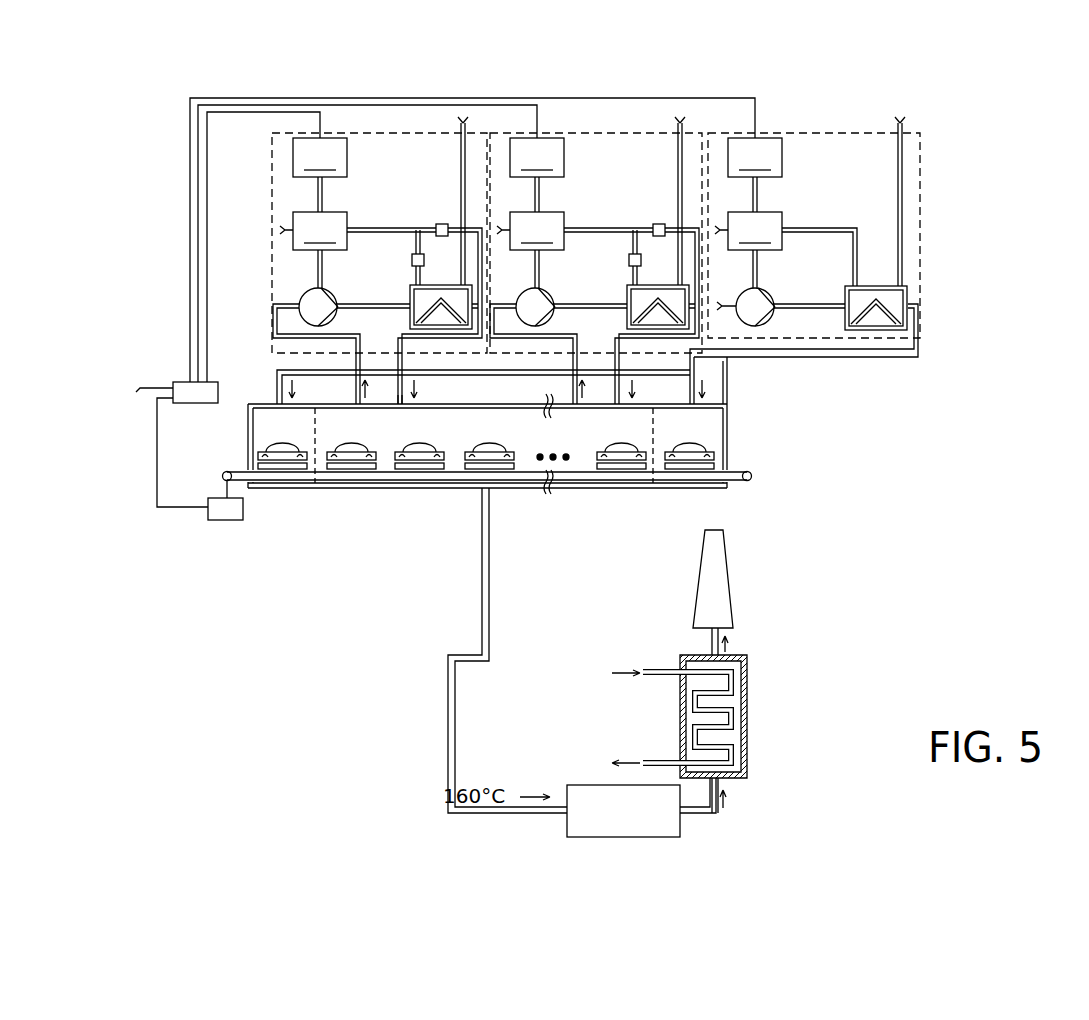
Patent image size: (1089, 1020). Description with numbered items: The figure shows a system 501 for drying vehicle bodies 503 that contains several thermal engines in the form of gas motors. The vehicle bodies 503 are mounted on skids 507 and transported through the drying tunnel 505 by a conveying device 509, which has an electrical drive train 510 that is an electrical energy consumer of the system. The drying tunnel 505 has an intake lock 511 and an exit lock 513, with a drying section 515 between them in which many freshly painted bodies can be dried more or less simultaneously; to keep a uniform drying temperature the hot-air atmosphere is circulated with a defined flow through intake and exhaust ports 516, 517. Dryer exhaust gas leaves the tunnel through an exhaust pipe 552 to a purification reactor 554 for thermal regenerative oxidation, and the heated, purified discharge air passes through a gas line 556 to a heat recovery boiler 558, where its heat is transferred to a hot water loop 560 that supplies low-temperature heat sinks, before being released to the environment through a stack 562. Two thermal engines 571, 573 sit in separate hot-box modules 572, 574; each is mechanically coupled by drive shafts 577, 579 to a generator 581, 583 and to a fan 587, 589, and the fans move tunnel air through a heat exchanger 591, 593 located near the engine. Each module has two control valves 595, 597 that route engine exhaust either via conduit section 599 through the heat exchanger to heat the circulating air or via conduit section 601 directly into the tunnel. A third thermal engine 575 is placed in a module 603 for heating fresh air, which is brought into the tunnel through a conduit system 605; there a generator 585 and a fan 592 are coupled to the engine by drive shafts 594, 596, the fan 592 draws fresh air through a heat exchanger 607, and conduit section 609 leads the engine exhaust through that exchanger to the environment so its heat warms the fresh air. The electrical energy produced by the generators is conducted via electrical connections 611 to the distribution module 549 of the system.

The system for drying vehicle bodies 501 is at (260, 663).
The vehicle bodies 503 is at (278, 447).
The drying tunnel 505 is at (803, 377).
The skids 507 is at (296, 470).
The conveying device 509 is at (735, 464).
The electrical drive train 510 is at (208, 513).
The intake lock 511 is at (263, 405).
The exit lock 513 is at (712, 410).
The drying section 515 is at (415, 490).
The intake port 516 is at (400, 410).
The exhaust port 517 is at (358, 410).
The distribution module 549 is at (190, 405).
The exhaust pipe 552 is at (476, 815).
The purification reactor 554 is at (565, 832).
The gas line 556 is at (705, 815).
The heat recovery boiler 558 is at (750, 715).
The hot water loop 560 is at (655, 677).
The stack 562 is at (736, 573).
The thermal engine 571 is at (313, 231).
The hot-box module 572 is at (376, 132).
The thermal engine 573 is at (530, 231).
The hot-box module 574 is at (594, 132).
The thermal engine 575 is at (748, 231).
The drive shaft 577 is at (317, 188).
The drive shaft 579 is at (317, 264).
The generator 581 is at (320, 157).
The generator 583 is at (537, 157).
The generator 585 is at (755, 157).
The fan 587 is at (336, 316).
The fan 589 is at (553, 316).
The heat exchanger 591 is at (441, 285).
The fan 592 is at (774, 316).
The heat exchanger 593 is at (658, 285).
The drive shaft 594 is at (754, 188).
The control valve 595 is at (412, 260).
The drive shaft 596 is at (754, 264).
The control valve 597 is at (436, 226).
The conduit section 599 is at (410, 278).
The conduit section 601 is at (477, 224).
The module for heating-up of fresh air 603 is at (810, 132).
The conduit system 605 is at (908, 358).
The heat exchanger 607 is at (872, 286).
The conduit section 609 is at (822, 228).
The electrical connections 611 is at (240, 110).